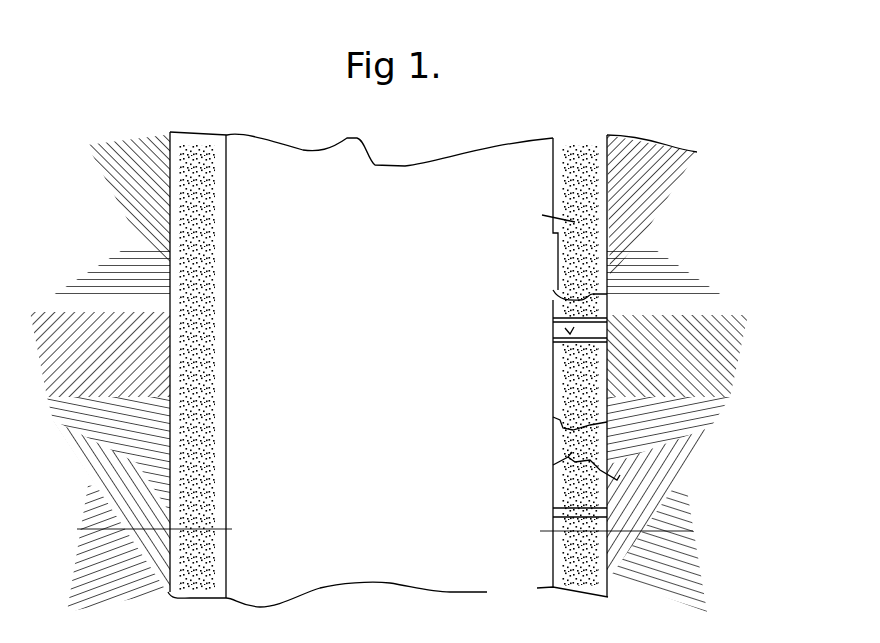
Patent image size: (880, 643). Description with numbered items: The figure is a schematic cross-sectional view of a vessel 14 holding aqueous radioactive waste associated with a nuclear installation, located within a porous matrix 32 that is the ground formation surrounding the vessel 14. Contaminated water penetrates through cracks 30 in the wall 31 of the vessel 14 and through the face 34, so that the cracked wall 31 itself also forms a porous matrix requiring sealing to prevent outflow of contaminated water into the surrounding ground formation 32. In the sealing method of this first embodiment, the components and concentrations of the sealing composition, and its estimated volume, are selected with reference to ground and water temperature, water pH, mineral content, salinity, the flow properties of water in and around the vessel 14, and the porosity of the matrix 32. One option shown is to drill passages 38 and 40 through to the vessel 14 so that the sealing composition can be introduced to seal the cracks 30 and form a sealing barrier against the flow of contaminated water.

The vessel 14 is at (385, 374).
The cracks 30 is at (555, 288).
The wall 31 is at (552, 427).
The porous matrix 32 is at (790, 376).
The face 34 is at (553, 465).
The passage 38 is at (552, 342).
The passage 40 is at (552, 318).